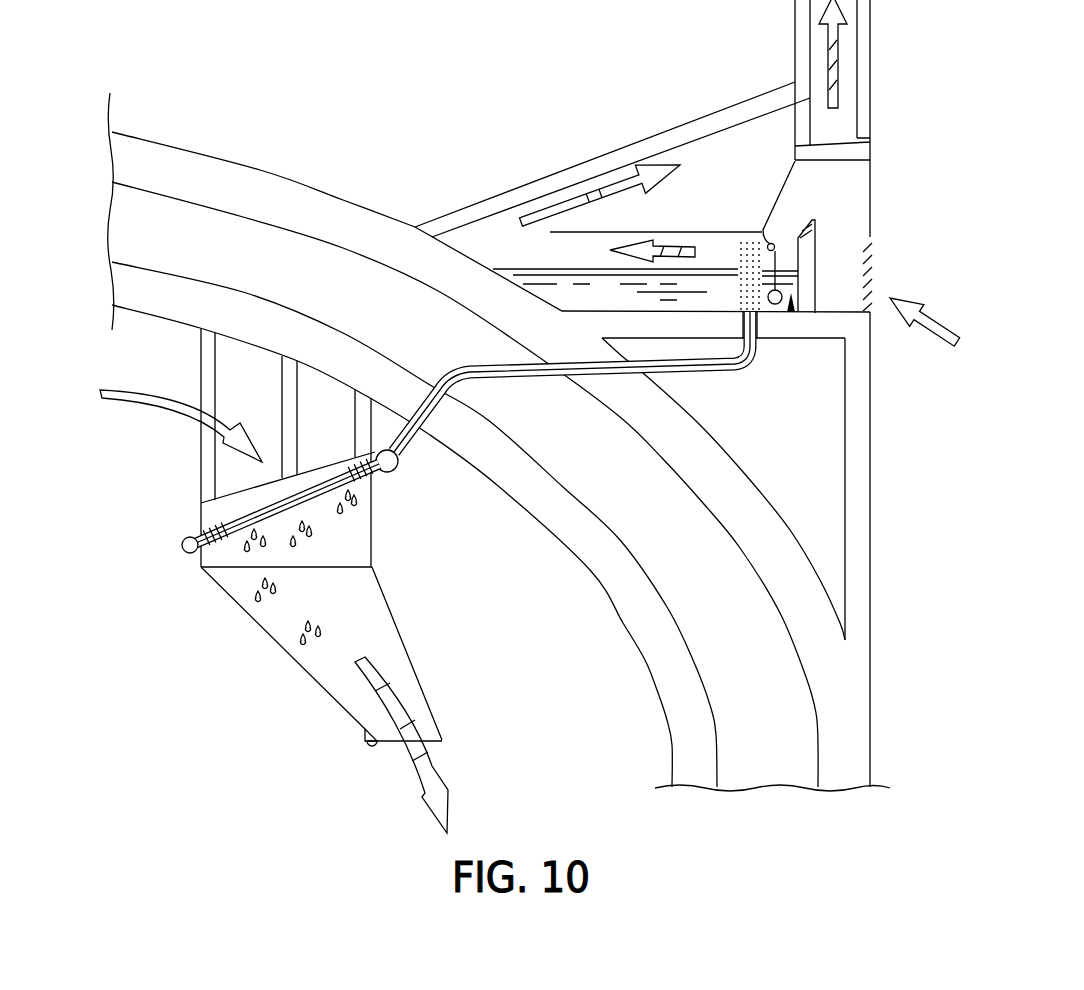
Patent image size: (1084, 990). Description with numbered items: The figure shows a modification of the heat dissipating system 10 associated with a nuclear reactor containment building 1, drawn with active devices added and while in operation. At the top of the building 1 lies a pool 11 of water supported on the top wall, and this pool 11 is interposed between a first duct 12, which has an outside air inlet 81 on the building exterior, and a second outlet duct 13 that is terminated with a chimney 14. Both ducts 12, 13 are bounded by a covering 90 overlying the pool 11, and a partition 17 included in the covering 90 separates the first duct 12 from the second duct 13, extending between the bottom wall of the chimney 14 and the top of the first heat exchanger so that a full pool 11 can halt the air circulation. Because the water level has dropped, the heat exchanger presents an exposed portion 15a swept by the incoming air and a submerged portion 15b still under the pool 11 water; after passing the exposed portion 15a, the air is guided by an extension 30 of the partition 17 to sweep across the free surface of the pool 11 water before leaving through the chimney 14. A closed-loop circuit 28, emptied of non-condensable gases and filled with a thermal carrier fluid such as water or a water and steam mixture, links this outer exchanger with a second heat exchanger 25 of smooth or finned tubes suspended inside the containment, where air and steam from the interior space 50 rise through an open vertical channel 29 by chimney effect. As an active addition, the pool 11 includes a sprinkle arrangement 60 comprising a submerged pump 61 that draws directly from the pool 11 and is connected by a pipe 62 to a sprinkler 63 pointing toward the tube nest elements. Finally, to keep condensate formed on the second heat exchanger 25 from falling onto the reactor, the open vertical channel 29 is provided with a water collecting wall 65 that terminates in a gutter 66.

The nuclear reactor containment building 1 is at (329, 108).
The heat dissipating system 10 is at (468, 350).
The pool 11 is at (512, 267).
The first duct 12 is at (855, 193).
The second outlet duct 13 is at (703, 150).
The chimney 14 is at (857, 2).
The exposed portion of the heat exchanger 15a is at (727, 257).
The submerged portion of the heat exchanger 15b is at (738, 292).
The partition 17 is at (779, 188).
The second heat exchanger 25 is at (228, 520).
The closed-loop circuit 28 is at (536, 370).
The open vertical channel 29 is at (388, 643).
The extension of the partition 30 is at (580, 223).
The interior space 50 is at (175, 669).
The sprinkle arrangement 60 is at (793, 315).
The submerged pump 61 is at (774, 305).
The pipe 62 is at (776, 258).
The sprinkler 63 is at (775, 243).
The water collecting wall 65 is at (303, 667).
The gutter 66 is at (372, 745).
The outside air inlet 81 is at (873, 272).
The covering 90 is at (628, 158).